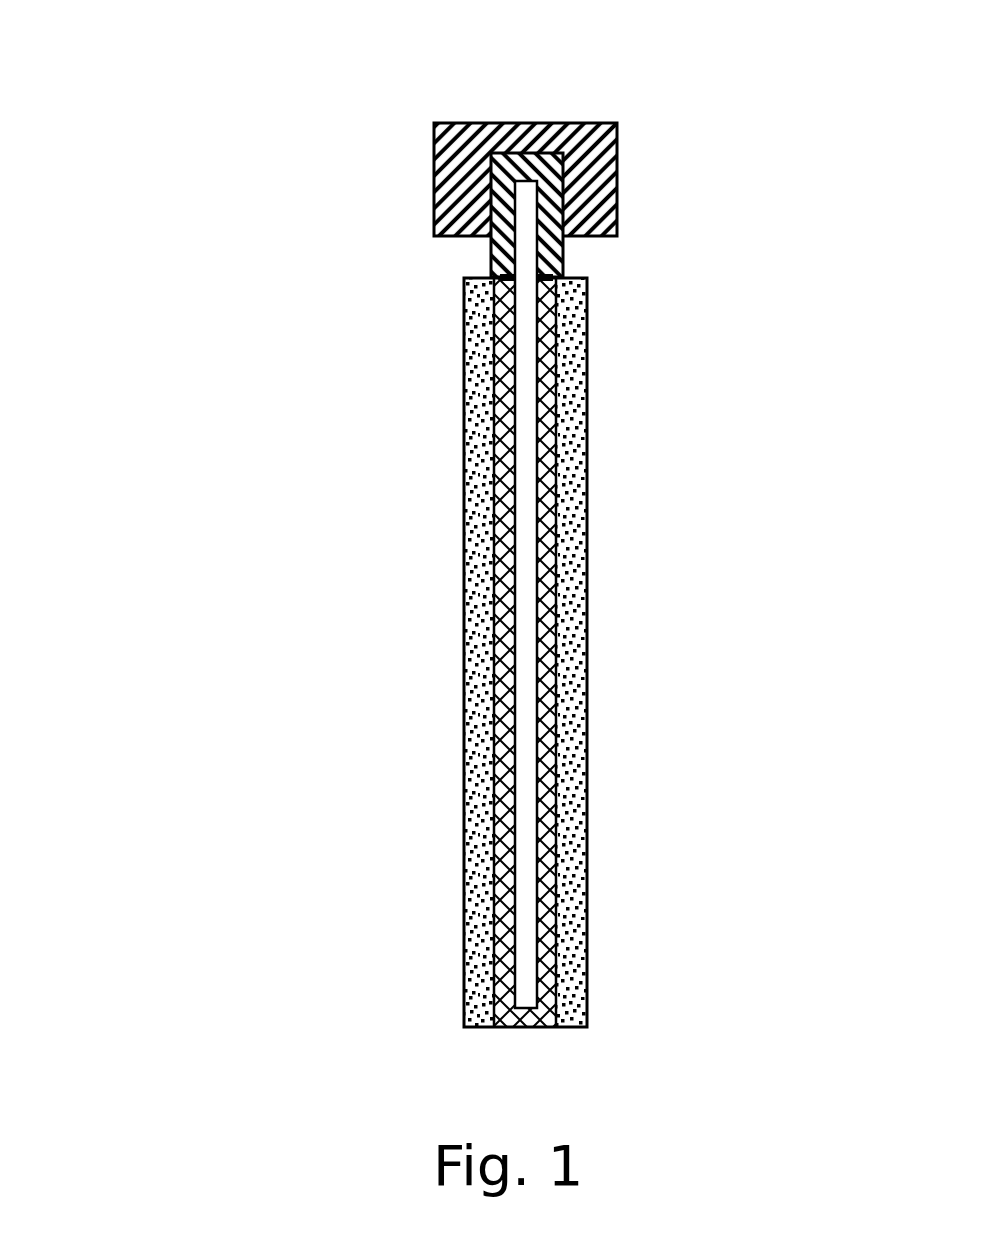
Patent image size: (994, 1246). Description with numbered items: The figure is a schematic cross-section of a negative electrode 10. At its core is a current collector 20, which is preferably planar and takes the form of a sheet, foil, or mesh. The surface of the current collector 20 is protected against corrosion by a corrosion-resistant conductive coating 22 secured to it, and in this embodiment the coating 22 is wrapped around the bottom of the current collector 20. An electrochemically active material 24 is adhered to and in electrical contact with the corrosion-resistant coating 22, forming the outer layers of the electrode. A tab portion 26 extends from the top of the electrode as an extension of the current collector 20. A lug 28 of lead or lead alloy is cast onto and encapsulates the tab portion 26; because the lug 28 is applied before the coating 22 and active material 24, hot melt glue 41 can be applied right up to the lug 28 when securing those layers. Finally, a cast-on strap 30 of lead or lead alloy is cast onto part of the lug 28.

The negative electrode 10 is at (212, 283).
The current collector 20 is at (528, 652).
The corrosion-resistant conductive coating 22 is at (510, 650).
The electrochemically active material 24 is at (477, 567).
The tab portion 26 is at (643, 594).
The lug 28 is at (563, 207).
The cast-on strap 30 is at (467, 152).
The hot melt glue 41 is at (492, 273).